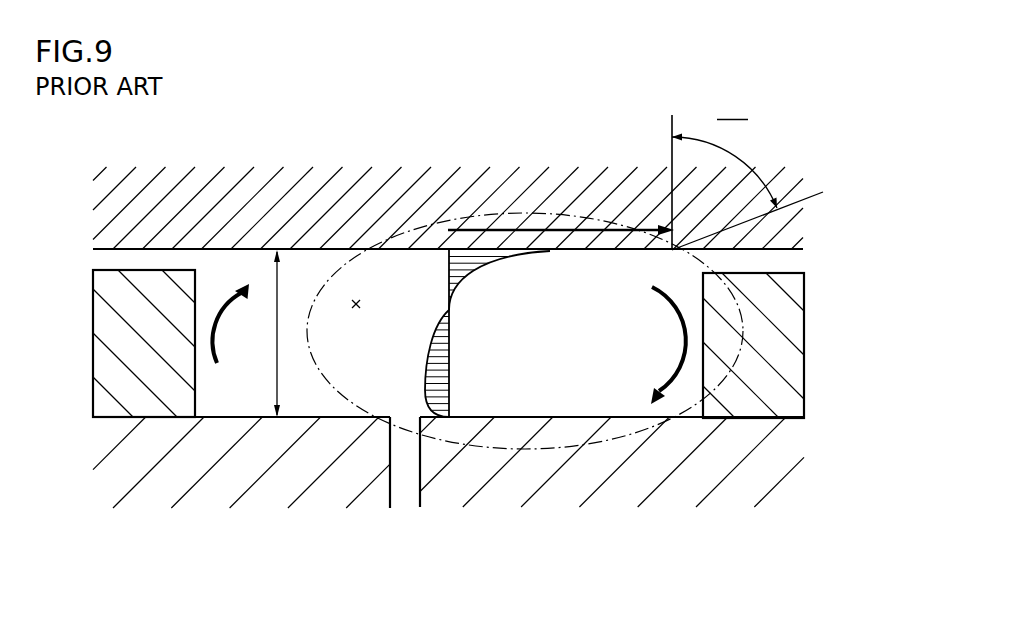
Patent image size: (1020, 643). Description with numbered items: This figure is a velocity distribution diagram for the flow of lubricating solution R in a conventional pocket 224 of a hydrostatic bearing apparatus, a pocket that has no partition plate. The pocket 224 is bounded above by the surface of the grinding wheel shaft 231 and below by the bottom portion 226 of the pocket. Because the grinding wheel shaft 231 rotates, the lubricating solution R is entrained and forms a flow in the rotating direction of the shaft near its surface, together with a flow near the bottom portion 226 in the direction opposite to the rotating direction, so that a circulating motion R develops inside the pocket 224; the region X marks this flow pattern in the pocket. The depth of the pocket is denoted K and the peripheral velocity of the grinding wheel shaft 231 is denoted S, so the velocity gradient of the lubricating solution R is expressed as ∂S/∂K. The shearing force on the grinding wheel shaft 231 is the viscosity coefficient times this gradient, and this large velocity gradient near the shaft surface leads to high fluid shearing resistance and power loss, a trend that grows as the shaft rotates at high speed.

The grinding wheel shaft 231 is at (313, 208).
The pocket 224 is at (356, 300).
The bottom portion 226 is at (313, 414).
The lubricating solution R is at (225, 297).
The peripheral velocity S is at (548, 228).
The depth of the pocket K is at (270, 333).
The recirculation region X is at (483, 450).